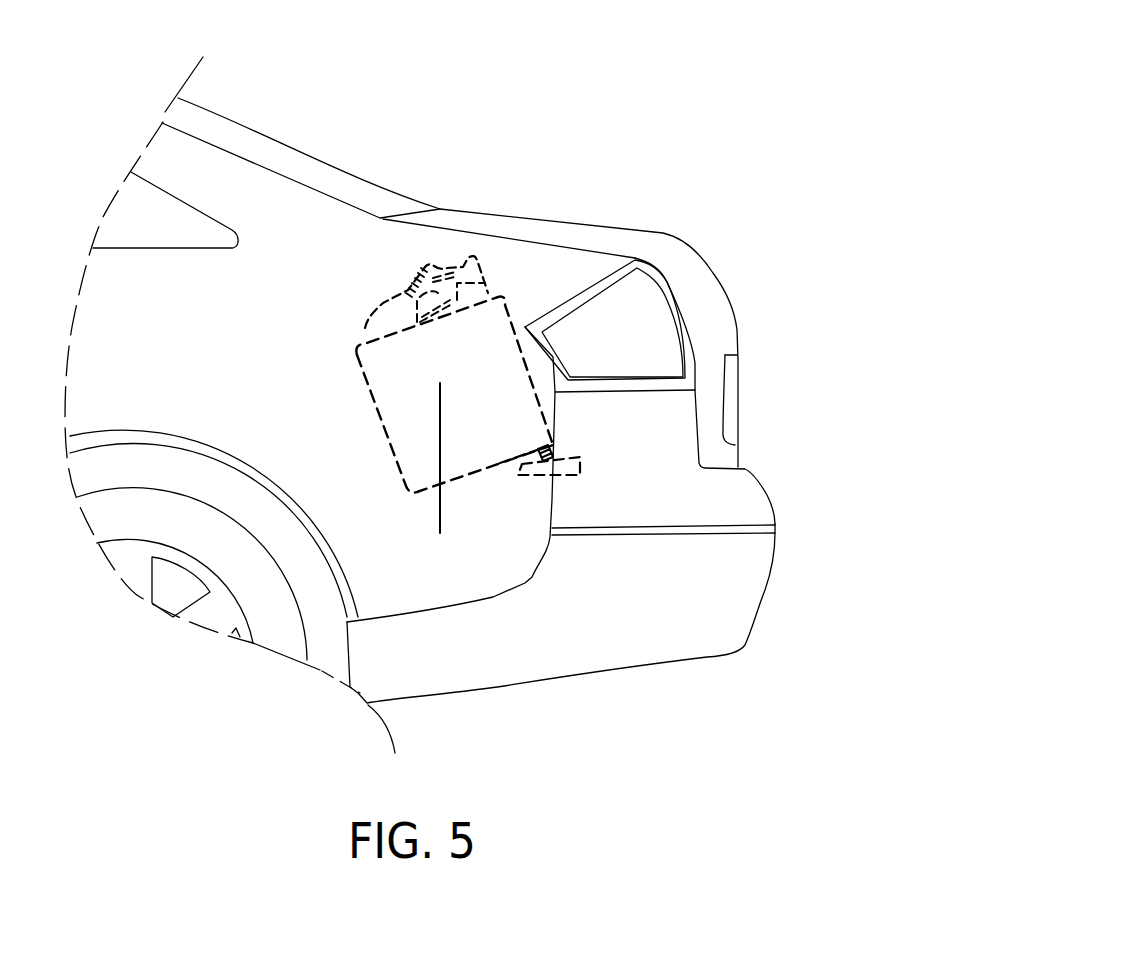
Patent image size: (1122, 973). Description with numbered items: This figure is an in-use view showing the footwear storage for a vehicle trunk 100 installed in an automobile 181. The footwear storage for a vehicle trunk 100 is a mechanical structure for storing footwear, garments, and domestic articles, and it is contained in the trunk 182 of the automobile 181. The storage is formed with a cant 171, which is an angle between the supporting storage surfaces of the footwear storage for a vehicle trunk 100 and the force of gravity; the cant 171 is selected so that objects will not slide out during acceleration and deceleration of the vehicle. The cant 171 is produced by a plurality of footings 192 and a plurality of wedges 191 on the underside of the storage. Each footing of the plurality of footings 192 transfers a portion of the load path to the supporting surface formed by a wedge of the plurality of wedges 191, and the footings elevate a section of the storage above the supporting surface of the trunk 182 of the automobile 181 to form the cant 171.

The footwear storage for a vehicle trunk 100 is at (507, 300).
The cant 171 is at (458, 473).
The automobile 181 is at (262, 134).
The trunk 182 is at (512, 555).
The plurality of wedges 191 is at (580, 466).
The plurality of footings 192 is at (547, 447).